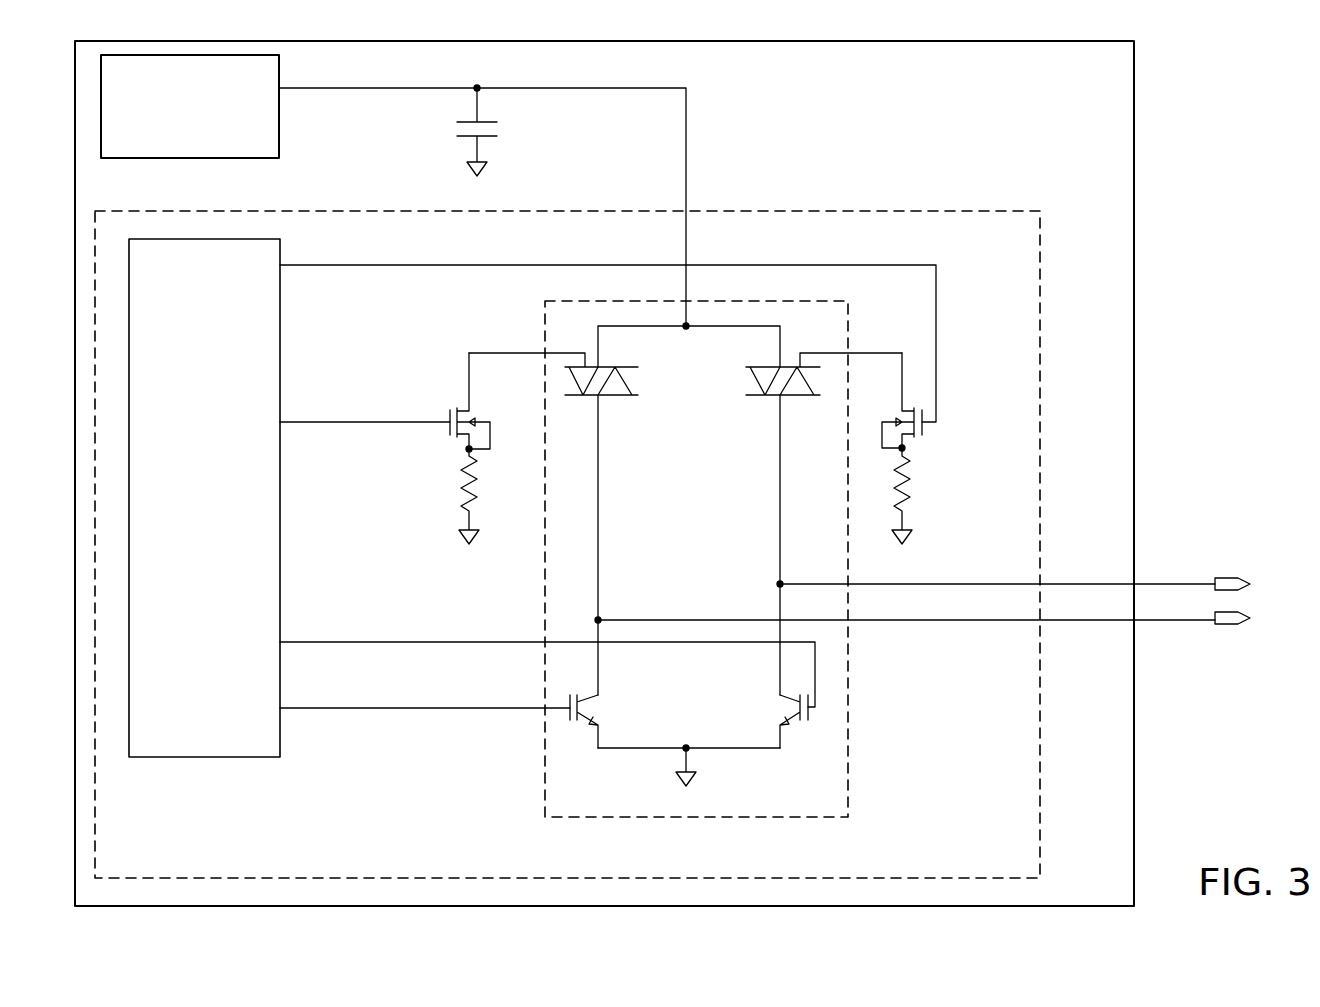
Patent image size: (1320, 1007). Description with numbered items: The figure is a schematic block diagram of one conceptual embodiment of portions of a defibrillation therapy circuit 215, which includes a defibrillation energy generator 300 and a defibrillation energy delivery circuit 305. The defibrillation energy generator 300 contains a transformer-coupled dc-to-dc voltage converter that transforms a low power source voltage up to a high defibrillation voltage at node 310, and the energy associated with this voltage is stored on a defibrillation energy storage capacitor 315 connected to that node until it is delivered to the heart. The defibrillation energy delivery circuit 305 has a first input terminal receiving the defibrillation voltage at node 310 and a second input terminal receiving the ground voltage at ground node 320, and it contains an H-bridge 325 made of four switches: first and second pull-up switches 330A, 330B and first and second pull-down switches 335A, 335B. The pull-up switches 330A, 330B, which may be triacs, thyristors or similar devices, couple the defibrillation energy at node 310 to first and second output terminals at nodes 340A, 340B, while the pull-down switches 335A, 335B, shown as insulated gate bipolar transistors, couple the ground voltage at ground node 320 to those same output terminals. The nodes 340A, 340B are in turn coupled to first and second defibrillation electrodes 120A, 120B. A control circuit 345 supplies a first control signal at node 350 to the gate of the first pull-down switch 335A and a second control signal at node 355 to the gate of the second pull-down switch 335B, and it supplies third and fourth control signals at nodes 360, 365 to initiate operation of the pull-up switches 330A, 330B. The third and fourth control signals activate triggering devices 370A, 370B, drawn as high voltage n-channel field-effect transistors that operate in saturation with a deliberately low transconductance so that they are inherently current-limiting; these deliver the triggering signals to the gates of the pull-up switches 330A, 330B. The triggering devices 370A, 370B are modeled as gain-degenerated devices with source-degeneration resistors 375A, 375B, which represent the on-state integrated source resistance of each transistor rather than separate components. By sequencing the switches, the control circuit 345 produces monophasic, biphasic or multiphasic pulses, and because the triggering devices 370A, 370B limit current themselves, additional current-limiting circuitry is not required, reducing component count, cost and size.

The defibrillation therapy circuit 215 is at (1134, 95).
The defibrillation energy generator circuit 300 is at (280, 128).
The node 310 is at (687, 133).
The defibrillation energy storage capacitor 315 is at (500, 128).
The defibrillation energy delivery circuit 305 is at (1040, 832).
The control circuit 345 is at (205, 758).
The node 360 is at (355, 266).
The node 365 is at (355, 422).
The node 350 is at (355, 640).
The node 355 is at (355, 706).
The H-bridge 325 is at (849, 775).
The first pull-up switch 330A is at (766, 397).
The second pull-up switch 330B is at (614, 397).
The triggering device 370A is at (913, 438).
The triggering device 370B is at (457, 441).
The source-degeneration resistor 375A is at (910, 490).
The source-degeneration resistor 375B is at (464, 491).
The first pull-down switch 335A is at (775, 712).
The second pull-down switch 335B is at (602, 706).
The ground node 320 is at (689, 775).
The node 340A is at (975, 582).
The node 340B is at (975, 622).
The first defibrillation electrode 120A is at (1230, 577).
The second defibrillation electrode 120B is at (1230, 626).